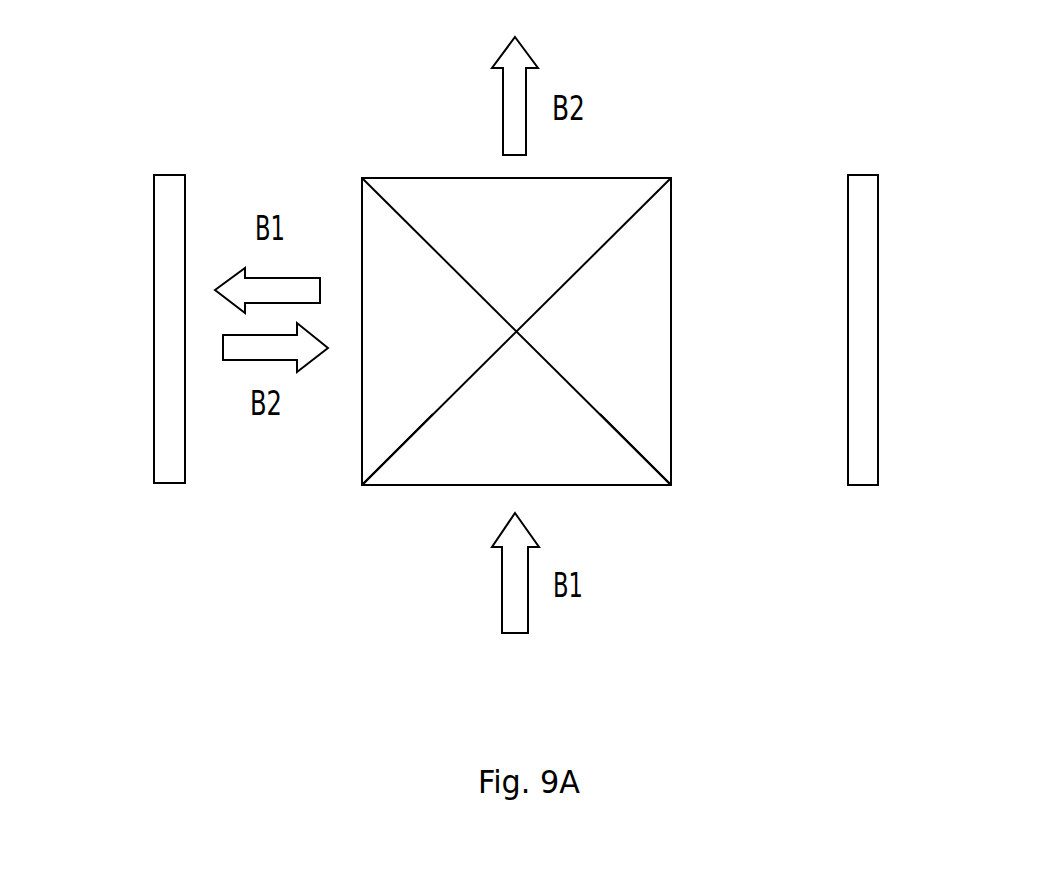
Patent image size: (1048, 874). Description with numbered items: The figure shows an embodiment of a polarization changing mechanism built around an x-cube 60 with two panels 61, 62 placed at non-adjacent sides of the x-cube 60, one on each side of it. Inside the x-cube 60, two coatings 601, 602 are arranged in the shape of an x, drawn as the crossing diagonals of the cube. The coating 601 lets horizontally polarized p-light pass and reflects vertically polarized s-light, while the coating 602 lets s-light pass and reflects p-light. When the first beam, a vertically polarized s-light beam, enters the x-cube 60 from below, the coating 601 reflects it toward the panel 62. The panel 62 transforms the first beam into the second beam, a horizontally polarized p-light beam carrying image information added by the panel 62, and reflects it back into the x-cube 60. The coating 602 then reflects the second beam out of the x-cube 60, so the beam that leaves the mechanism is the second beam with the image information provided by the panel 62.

The x-cube 60 is at (604, 200).
The coating 601 is at (630, 453).
The coating 602 is at (395, 457).
The panel 61 is at (868, 237).
The panel 62 is at (170, 233).